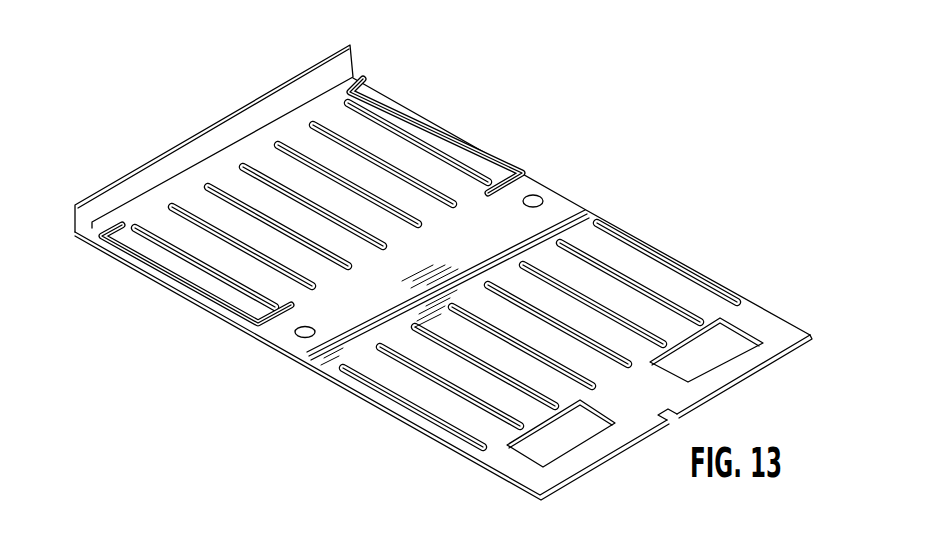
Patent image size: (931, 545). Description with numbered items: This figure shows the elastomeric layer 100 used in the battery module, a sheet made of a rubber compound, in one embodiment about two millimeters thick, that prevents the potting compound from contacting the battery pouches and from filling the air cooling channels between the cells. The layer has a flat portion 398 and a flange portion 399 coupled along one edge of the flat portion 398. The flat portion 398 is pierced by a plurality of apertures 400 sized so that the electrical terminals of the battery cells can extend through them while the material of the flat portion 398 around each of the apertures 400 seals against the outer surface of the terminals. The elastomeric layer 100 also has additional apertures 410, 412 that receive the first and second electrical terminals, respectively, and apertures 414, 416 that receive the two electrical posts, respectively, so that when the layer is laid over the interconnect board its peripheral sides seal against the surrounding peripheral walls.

The elastomeric layer 100 is at (590, 208).
The flat portion 398 is at (352, 86).
The flange portion 399 is at (354, 72).
The apertures 400 is at (445, 368).
The aperture 410 is at (582, 442).
The aperture 412 is at (725, 352).
The aperture 414 is at (533, 196).
The aperture 416 is at (306, 328).